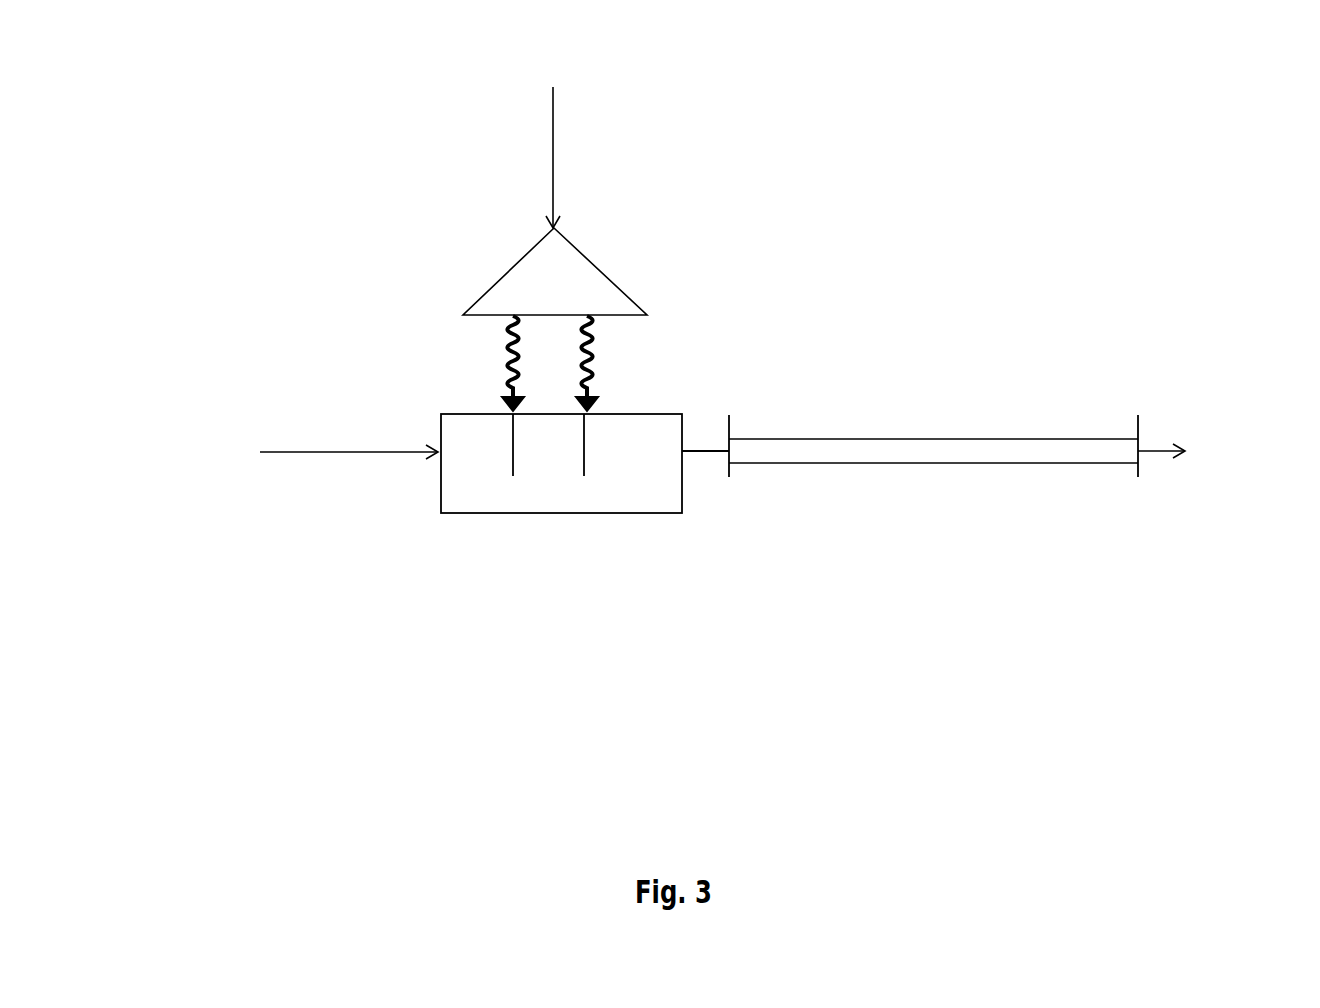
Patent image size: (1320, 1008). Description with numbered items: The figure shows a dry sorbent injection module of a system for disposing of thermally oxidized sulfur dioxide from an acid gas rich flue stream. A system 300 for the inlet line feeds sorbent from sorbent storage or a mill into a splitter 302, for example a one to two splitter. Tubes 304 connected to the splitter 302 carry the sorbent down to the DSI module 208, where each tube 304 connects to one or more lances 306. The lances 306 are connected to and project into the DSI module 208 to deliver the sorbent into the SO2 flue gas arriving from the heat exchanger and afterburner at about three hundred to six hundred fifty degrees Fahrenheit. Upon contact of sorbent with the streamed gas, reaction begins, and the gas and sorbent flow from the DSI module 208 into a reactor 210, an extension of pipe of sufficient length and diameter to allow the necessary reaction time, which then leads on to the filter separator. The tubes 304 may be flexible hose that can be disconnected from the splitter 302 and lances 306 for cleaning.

The system 300 is at (371, 118).
The splitter 302 is at (595, 263).
The tubes 304 is at (522, 347).
The DSI module 208 is at (593, 515).
The lances 306 is at (579, 458).
The reactor 210 is at (992, 439).